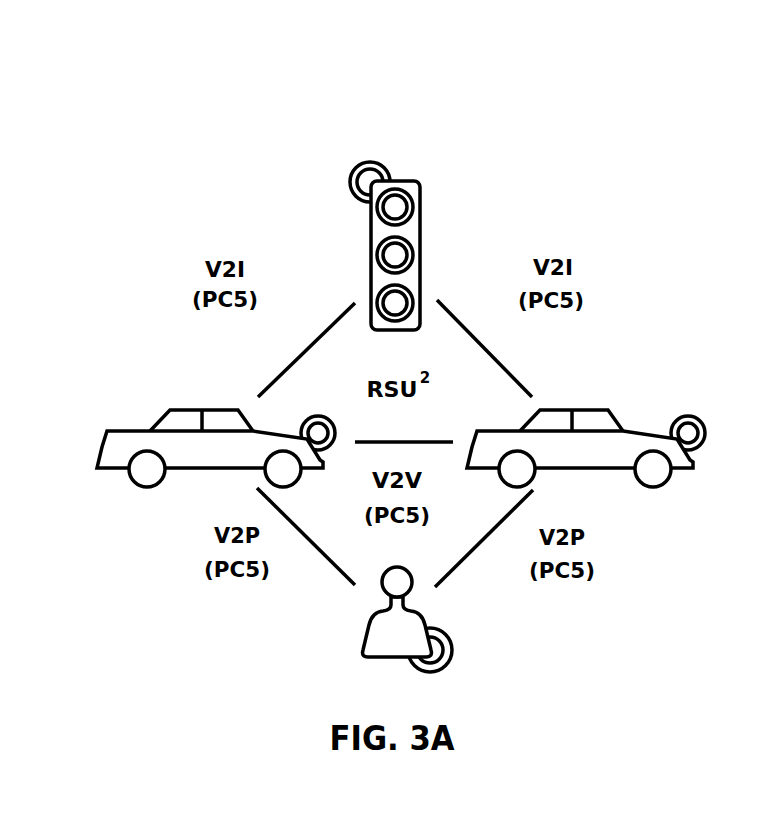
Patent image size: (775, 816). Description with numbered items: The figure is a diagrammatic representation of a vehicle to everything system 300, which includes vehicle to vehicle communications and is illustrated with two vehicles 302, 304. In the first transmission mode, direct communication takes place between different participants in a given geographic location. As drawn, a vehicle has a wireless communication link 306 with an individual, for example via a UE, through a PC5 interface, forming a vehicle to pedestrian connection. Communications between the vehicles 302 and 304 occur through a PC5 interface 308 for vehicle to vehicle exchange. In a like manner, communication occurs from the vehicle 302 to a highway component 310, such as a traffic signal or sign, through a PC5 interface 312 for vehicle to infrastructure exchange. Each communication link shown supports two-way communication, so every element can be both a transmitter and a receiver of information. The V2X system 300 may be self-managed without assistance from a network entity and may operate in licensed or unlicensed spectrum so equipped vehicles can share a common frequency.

The V2X system 300 is at (249, 79).
The vehicle 302 is at (97, 468).
The vehicle 304 is at (693, 468).
The wireless communication link 306 is at (330, 560).
The PC5 interface 308 is at (418, 442).
The highway component 310 is at (379, 331).
The PC5 interface 312 is at (335, 317).